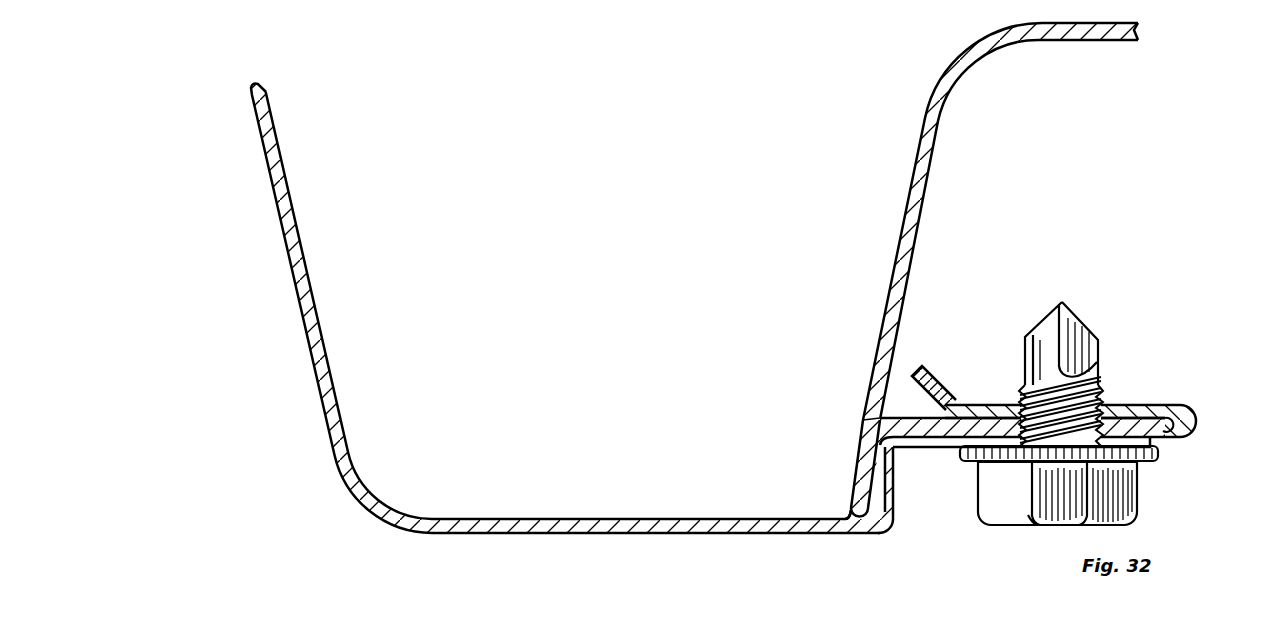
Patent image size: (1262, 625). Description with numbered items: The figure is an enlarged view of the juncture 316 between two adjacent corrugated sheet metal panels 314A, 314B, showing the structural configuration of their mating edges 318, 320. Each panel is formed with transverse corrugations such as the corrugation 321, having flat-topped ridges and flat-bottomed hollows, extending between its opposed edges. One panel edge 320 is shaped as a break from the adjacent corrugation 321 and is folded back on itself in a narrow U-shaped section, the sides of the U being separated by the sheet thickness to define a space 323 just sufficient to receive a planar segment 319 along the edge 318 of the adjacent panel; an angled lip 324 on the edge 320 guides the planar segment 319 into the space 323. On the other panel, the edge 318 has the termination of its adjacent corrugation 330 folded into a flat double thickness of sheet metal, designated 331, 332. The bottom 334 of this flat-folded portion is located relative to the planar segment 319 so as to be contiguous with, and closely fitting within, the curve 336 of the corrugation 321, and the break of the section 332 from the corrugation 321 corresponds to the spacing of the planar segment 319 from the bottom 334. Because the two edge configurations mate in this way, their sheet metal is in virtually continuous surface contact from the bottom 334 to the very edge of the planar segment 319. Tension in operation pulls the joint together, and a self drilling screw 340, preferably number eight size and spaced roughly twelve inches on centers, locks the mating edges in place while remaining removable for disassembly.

The panel 314A is at (342, 346).
The panel 314B is at (883, 285).
The juncture 316 is at (1003, 358).
The panel edge 318 is at (900, 406).
The planar segment 319 is at (1163, 447).
The panel edge 320 is at (1118, 390).
The corrugation 321 is at (748, 534).
The space 323 is at (1186, 403).
The angled lip 324 is at (938, 393).
The corrugation 330 is at (877, 372).
The flat double thickness portion 331 is at (865, 463).
The flat double thickness section 332 is at (868, 482).
The bottom of double thickness portion 334 is at (857, 518).
The curve of corrugation 336 is at (889, 514).
The self drilling screw 340 is at (963, 466).